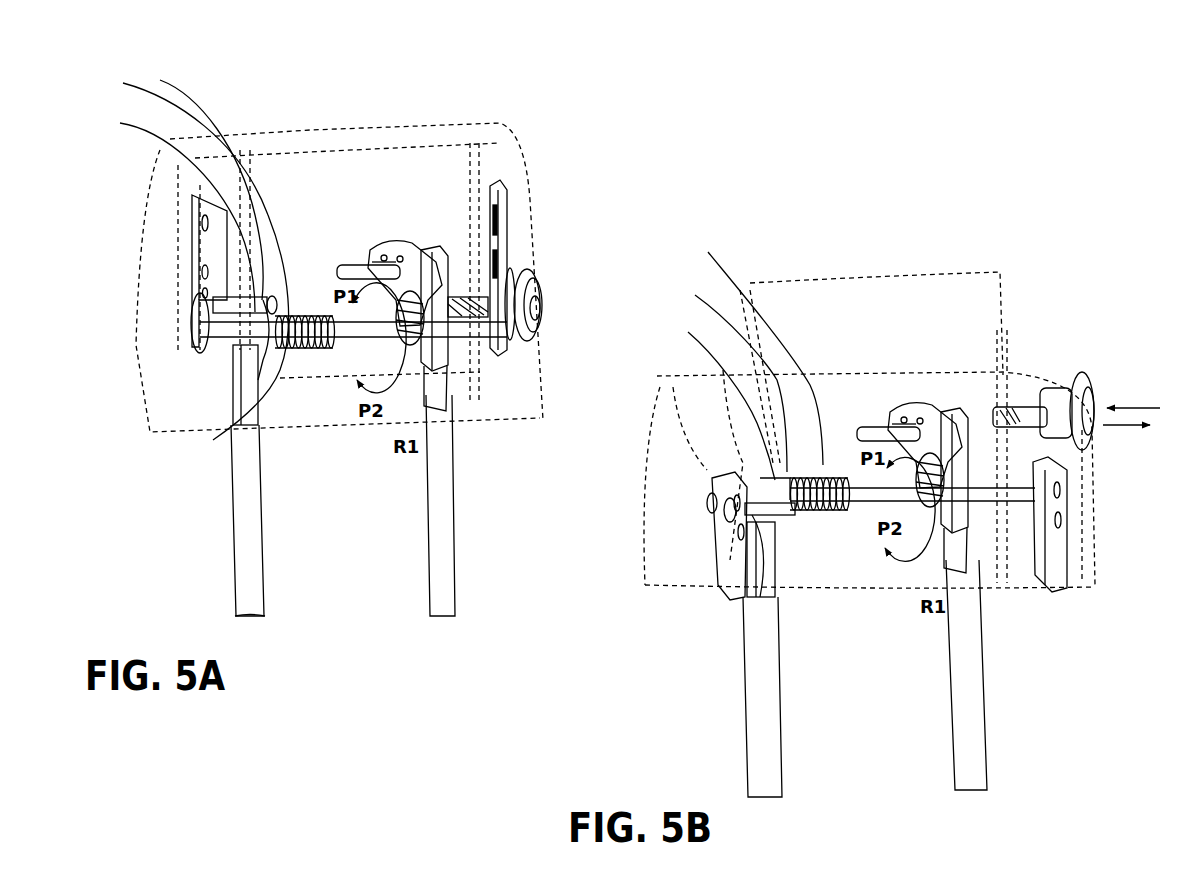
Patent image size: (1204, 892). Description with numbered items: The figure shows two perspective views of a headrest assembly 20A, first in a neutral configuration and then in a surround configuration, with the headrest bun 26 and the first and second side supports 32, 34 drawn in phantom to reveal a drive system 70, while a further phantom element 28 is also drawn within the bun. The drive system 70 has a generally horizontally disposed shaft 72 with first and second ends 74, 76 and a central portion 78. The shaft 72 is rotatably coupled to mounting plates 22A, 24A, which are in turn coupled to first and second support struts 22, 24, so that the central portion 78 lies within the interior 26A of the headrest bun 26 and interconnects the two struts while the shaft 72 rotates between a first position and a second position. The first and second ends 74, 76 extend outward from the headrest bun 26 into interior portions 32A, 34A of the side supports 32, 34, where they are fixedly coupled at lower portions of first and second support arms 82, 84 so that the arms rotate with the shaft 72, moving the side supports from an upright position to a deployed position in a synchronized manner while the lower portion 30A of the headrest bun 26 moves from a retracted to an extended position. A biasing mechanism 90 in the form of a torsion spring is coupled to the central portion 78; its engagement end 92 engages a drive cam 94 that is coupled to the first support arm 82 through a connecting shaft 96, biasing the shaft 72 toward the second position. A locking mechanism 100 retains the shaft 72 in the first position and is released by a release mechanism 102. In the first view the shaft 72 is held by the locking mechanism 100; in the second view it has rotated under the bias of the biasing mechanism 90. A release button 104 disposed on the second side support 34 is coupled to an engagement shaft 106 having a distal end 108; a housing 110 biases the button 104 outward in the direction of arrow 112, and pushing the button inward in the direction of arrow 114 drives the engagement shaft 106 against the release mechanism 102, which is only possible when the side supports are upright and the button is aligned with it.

In FIG. 5A, the headrest assembly 20A is at (487, 110).
In FIG. 5B, the headrest assembly 20A is at (1023, 277).
In FIG. 5A, the first support strut 22 is at (243, 547).
In FIG. 5B, the first support strut 22 is at (760, 740).
In FIG. 5A, the mounting plate 22A is at (235, 397).
In FIG. 5B, the mounting plate 22A is at (773, 567).
In FIG. 5A, the second support strut 24 is at (430, 558).
In FIG. 5B, the second support strut 24 is at (973, 727).
In FIG. 5A, the mounting plate 24A is at (460, 393).
In FIG. 5B, the mounting plate 24A is at (985, 575).
In FIG. 5A, the headrest bun 26 is at (282, 131).
In FIG. 5B, the headrest bun 26 is at (808, 273).
In FIG. 5A, the interior of headrest bun 26A is at (296, 216).
In FIG. 5B, the interior of headrest bun 26A is at (811, 332).
In FIG. 5A, the headrest frame 28 is at (340, 183).
In FIG. 5B, the headrest frame 28 is at (837, 323).
In FIG. 5A, the lower portion of headrest bun 30A is at (303, 413).
In FIG. 5B, the lower portion of headrest bun 30A is at (828, 597).
In FIG. 5A, the first side support 32 is at (152, 250).
In FIG. 5B, the first side support 32 is at (685, 470).
In FIG. 5A, the interior portion of first side support 32A is at (190, 262).
In FIG. 5B, the interior portion of first side support 32A is at (700, 500).
In FIG. 5A, the second side support 34 is at (523, 207).
In FIG. 5B, the second side support 34 is at (1025, 368).
In FIG. 5A, the interior portion of second side support 34A is at (517, 150).
In FIG. 5B, the interior portion of second side support 34A is at (1060, 355).
In FIG. 5A, the drive system 70 is at (313, 297).
In FIG. 5B, the drive system 70 is at (832, 460).
In FIG. 5A, the shaft 72 is at (327, 367).
In FIG. 5B, the shaft 72 is at (858, 517).
In FIG. 5A, the first end of shaft 74 is at (198, 335).
In FIG. 5B, the first end of shaft 74 is at (722, 535).
In FIG. 5A, the second end of shaft 76 is at (510, 337).
In FIG. 5A, the central portion of shaft 78 is at (333, 340).
In FIG. 5B, the central portion of shaft 78 is at (855, 505).
In FIG. 5A, the first support arm 82 is at (203, 250).
In FIG. 5B, the first support arm 82 is at (733, 540).
In FIG. 5A, the second support arm 84 is at (505, 252).
In FIG. 5B, the second support arm 84 is at (1062, 543).
In FIG. 5A, the biasing mechanism 90 is at (200, 182).
In FIG. 5B, the biasing mechanism 90 is at (760, 346).
In FIG. 5A, the engagement end 92 is at (173, 209).
In FIG. 5B, the engagement end 92 is at (734, 373).
In FIG. 5A, the drive cam 94 is at (194, 256).
In FIG. 5B, the drive cam 94 is at (723, 394).
In FIG. 5A, the connecting shaft 96 is at (215, 305).
In FIG. 5B, the connecting shaft 96 is at (742, 523).
In FIG. 5A, the locking mechanism 100 is at (446, 255).
In FIG. 5B, the locking mechanism 100 is at (967, 413).
In FIG. 5A, the release mechanism 102 is at (381, 240).
In FIG. 5B, the release mechanism 102 is at (895, 387).
In FIG. 5A, the release button 104 is at (551, 311).
In FIG. 5B, the release button 104 is at (1097, 368).
In FIG. 5B, the engagement shaft 106 is at (1010, 400).
In FIG. 5B, the distal end 108 is at (980, 410).
In FIG. 5A, the housing 110 is at (543, 337).
In FIG. 5B, the housing 110 is at (1053, 447).
In FIG. 5B, the arrow 112 is at (1112, 428).
In FIG. 5B, the arrow 114 is at (1125, 404).